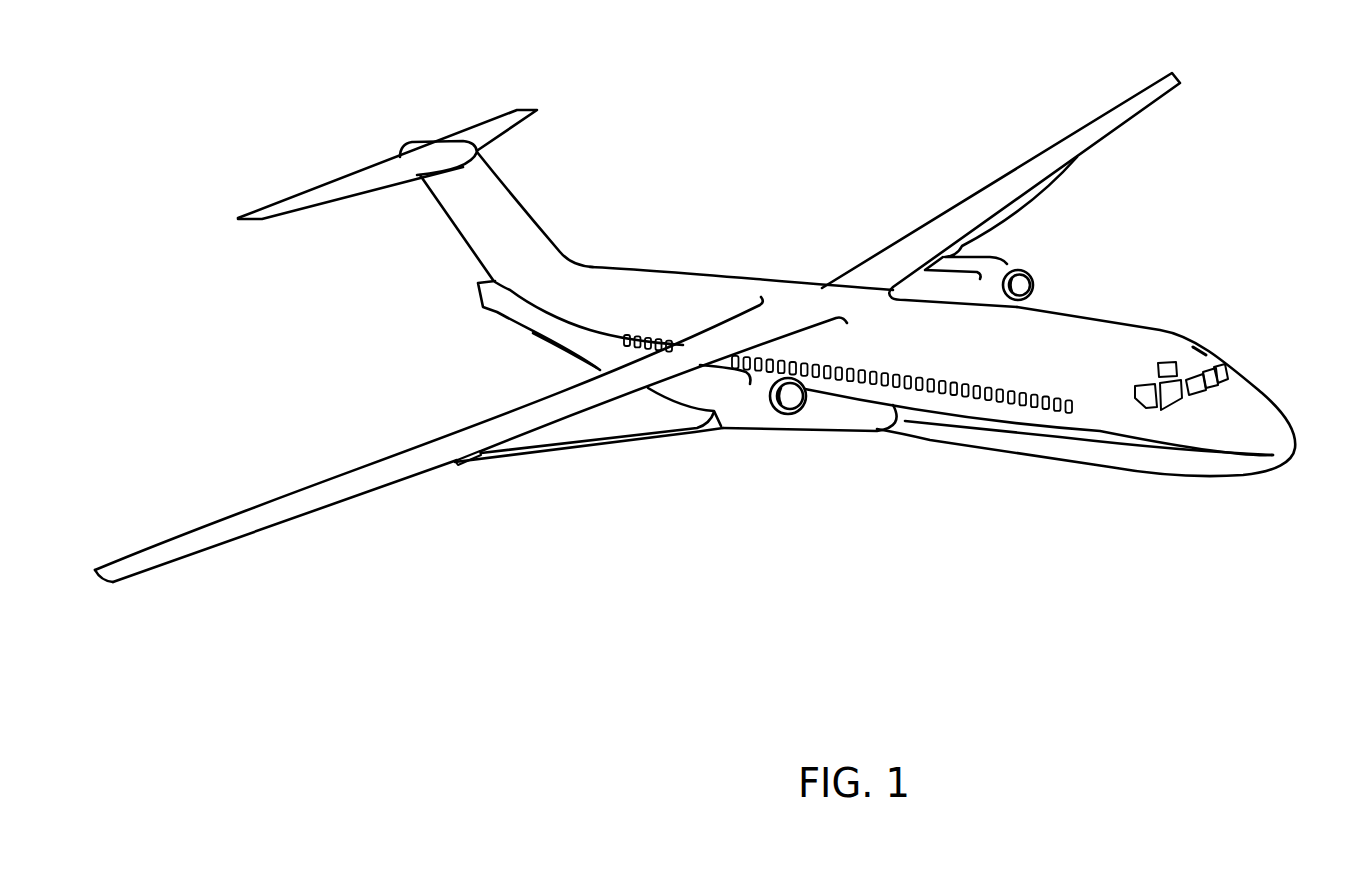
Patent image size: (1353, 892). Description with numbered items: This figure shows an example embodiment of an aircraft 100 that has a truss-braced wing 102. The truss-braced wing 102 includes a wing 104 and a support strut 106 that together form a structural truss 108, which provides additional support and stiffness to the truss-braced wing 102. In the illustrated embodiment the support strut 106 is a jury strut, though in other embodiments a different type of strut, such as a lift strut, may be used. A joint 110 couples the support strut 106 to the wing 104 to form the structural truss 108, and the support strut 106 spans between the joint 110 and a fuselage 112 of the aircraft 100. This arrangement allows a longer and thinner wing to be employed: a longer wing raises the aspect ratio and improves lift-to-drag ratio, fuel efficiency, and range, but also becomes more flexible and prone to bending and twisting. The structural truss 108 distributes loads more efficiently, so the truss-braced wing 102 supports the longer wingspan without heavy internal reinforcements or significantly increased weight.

The aircraft 100 is at (1182, 193).
The truss-braced wing 102 is at (446, 398).
The wing 104 is at (347, 472).
The support strut 106 is at (661, 440).
The structural truss 108 is at (612, 473).
The joint 110 is at (460, 466).
The fuselage 112 is at (708, 288).